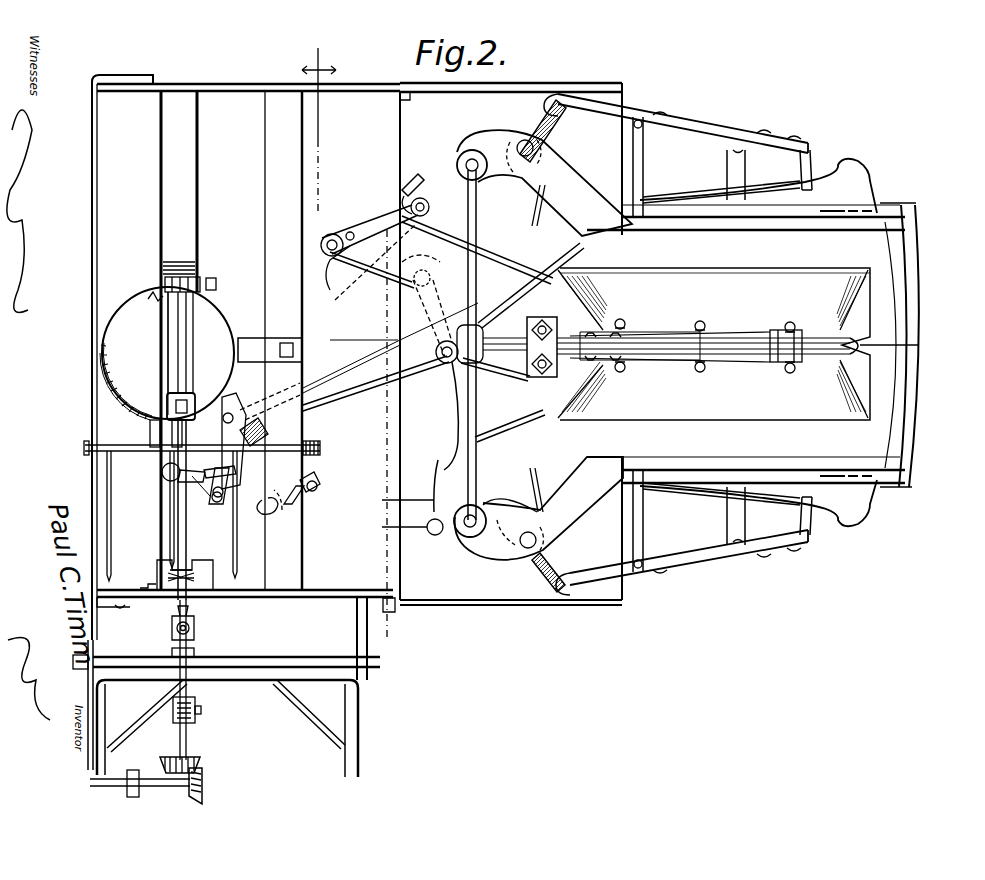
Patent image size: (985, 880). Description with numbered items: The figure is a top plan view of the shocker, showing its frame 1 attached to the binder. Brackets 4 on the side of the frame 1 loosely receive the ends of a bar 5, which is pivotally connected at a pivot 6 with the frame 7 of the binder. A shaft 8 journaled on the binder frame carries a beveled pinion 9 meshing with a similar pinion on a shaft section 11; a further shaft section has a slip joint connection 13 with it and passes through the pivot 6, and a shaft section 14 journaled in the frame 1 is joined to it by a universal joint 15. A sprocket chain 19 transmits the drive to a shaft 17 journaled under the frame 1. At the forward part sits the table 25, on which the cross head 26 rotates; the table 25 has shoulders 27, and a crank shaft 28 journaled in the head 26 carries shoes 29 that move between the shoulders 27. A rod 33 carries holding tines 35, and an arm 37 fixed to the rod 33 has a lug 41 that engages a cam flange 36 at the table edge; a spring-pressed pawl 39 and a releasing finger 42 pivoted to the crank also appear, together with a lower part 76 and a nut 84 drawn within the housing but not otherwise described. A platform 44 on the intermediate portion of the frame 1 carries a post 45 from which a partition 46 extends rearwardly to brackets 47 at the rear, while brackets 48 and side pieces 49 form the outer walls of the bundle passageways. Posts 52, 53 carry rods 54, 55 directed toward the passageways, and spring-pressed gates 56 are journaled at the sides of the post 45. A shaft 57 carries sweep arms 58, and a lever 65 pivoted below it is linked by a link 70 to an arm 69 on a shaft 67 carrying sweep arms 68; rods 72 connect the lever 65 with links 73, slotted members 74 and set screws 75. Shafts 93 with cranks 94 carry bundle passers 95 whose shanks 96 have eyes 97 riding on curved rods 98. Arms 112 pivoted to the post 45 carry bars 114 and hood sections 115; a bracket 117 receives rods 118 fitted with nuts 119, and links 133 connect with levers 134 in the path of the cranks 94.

The frame 1 is at (246, 357).
The brackets 4 is at (95, 632).
The bar 5 is at (300, 668).
The pivot 6 is at (194, 652).
The frame of the binder 7 is at (335, 598).
The shaft 8 is at (112, 782).
The beveled pinion 9 is at (204, 786).
The slip joint connection 13 is at (173, 710).
The shaft section 14 is at (172, 618).
The universal joint 15 is at (170, 634).
The sprocket chain 19 is at (183, 612).
The shaft section 11 is at (372, 270).
The shaft 17 is at (360, 330).
The table 25 is at (130, 318).
The cross head 26 is at (170, 365).
The shoulders 27 is at (148, 288).
The crank shaft 28 is at (175, 440).
The shoes 29 is at (195, 395).
The rod 33 is at (85, 448).
The holding tines 35 is at (238, 552).
The cam flange 36 is at (112, 400).
The arm 37 is at (150, 432).
The spring-pressed pawl 39 is at (200, 285).
The lug 41 is at (172, 430).
The releasing finger 42 is at (180, 520).
The platform 44 is at (511, 344).
The post 45 is at (484, 340).
The partition 46 is at (888, 355).
The brackets 47 is at (908, 296).
The brackets 48 is at (590, 470).
The side pieces 49 is at (845, 220).
The post 52 is at (394, 526).
The post 53 is at (412, 180).
The rod 54 is at (398, 502).
The rod 55 is at (442, 245).
The spring-pressed gates 56 is at (500, 372).
The shaft 57 is at (450, 390).
The sweep arms 58 is at (442, 434).
The lever 65 is at (438, 356).
The shaft 67 is at (410, 203).
The sweep arms 68 is at (342, 278).
The arm 69 is at (368, 222).
The link 70 is at (365, 298).
The rods 72 is at (338, 382).
The links 73 is at (222, 504).
The slotted members 74 is at (236, 478).
The set screws 75 is at (170, 482).
The bearing block 76 is at (160, 564).
The nut 84 is at (320, 454).
The shafts 93 is at (522, 142).
The cranks 94 is at (510, 180).
The bundle passers 95 is at (550, 138).
The shanks 96 is at (715, 128).
The eyes 97 is at (814, 180).
The rods 98 is at (832, 160).
The arms 112 is at (654, 334).
The bars 114 is at (765, 330).
The hood sections 115 is at (733, 282).
The bracket 117 is at (556, 325).
The rods 118 is at (545, 376).
The nuts 119 is at (593, 328).
The links 133 is at (642, 184).
The levers 134 is at (700, 140).